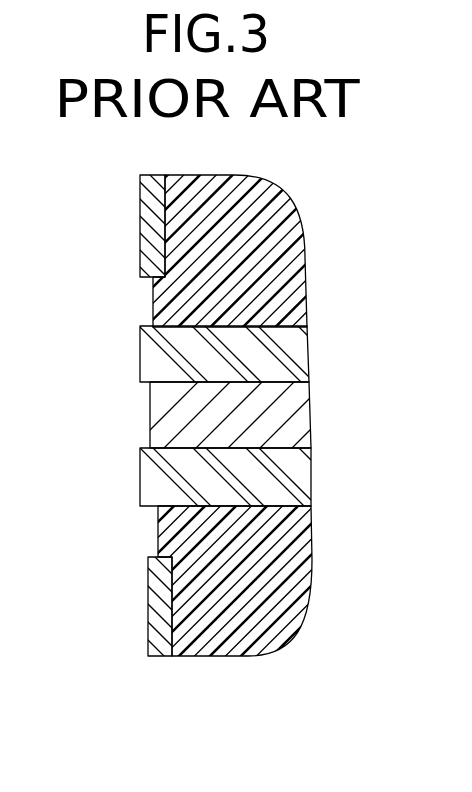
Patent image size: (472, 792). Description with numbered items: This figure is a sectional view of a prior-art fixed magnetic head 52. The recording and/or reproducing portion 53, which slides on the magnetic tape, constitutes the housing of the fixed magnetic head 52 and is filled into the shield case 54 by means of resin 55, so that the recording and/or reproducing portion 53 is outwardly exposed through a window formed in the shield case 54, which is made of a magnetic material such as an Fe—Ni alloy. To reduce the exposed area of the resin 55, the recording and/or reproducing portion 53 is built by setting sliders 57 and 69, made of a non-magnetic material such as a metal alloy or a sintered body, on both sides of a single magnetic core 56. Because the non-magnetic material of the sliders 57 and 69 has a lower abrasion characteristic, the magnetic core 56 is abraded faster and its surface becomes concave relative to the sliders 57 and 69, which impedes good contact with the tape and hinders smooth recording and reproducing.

The fixed magnetic head 52 is at (117, 235).
The recording and/or reproducing portion 53 is at (338, 323).
The shield case 54 is at (150, 193).
The resin 55 is at (157, 298).
The magnetic core 56 is at (158, 419).
The slider 57 is at (150, 355).
The slider 69 is at (150, 477).